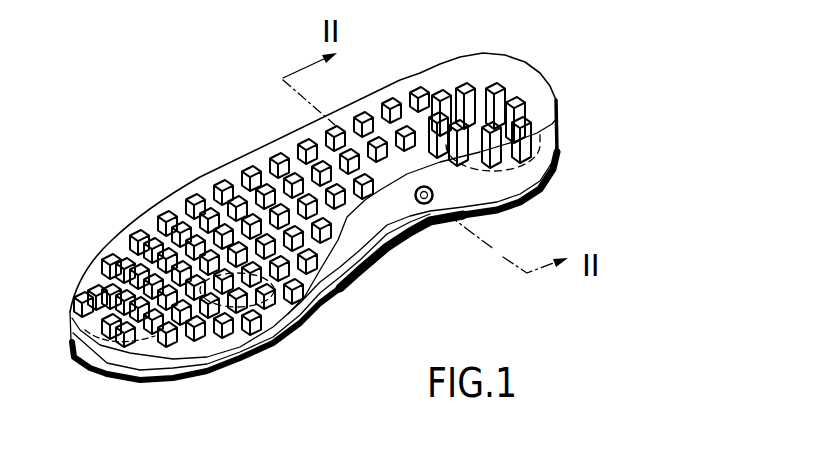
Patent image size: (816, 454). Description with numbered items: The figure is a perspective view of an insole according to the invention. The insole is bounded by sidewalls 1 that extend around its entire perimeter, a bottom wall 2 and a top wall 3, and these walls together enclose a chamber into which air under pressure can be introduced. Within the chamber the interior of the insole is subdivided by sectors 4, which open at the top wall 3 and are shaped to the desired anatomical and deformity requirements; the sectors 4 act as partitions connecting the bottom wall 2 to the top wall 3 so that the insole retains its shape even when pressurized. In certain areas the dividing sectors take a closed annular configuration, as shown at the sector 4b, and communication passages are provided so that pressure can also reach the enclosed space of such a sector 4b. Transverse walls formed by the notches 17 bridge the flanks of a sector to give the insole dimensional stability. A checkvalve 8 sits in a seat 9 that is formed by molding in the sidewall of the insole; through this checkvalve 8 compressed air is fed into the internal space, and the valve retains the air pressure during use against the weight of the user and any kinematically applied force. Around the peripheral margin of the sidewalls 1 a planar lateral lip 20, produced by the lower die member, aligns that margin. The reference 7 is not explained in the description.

The sidewalls 1 is at (337, 265).
The bottom wall 2 is at (217, 363).
The top wall 3 is at (444, 74).
The sectors 4 is at (378, 110).
The closed annular sector 4b is at (272, 290).
The heel outsole edge 7 is at (468, 232).
The checkvalve 8 is at (427, 204).
The seat 9 is at (416, 198).
The transverse notches 17 is at (268, 180).
The lateral lip 20 is at (73, 350).